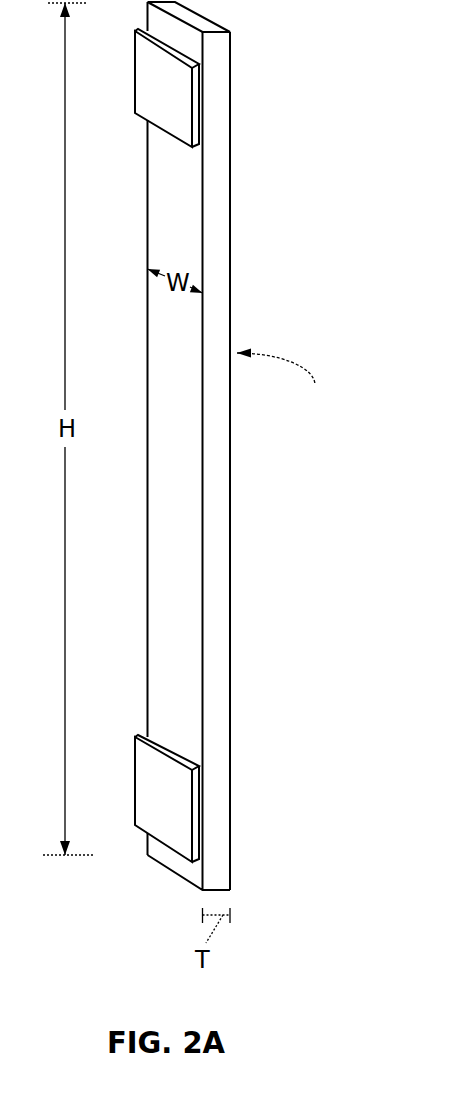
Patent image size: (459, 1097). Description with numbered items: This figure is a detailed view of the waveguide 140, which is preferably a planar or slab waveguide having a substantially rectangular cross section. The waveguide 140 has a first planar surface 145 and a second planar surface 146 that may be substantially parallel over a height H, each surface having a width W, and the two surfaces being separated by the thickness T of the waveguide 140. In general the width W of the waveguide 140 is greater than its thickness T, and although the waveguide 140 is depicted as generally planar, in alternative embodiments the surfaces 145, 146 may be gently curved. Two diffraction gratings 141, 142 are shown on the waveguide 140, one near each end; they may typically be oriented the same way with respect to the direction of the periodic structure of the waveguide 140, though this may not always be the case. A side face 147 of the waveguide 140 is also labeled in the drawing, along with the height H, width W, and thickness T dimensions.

The waveguide 140 is at (233, 508).
The diffraction grating 141 is at (183, 100).
The diffraction grating 142 is at (183, 810).
The first planar surface 145 is at (193, 568).
The second planar surface 146 is at (283, 387).
The side face 147 is at (217, 649).